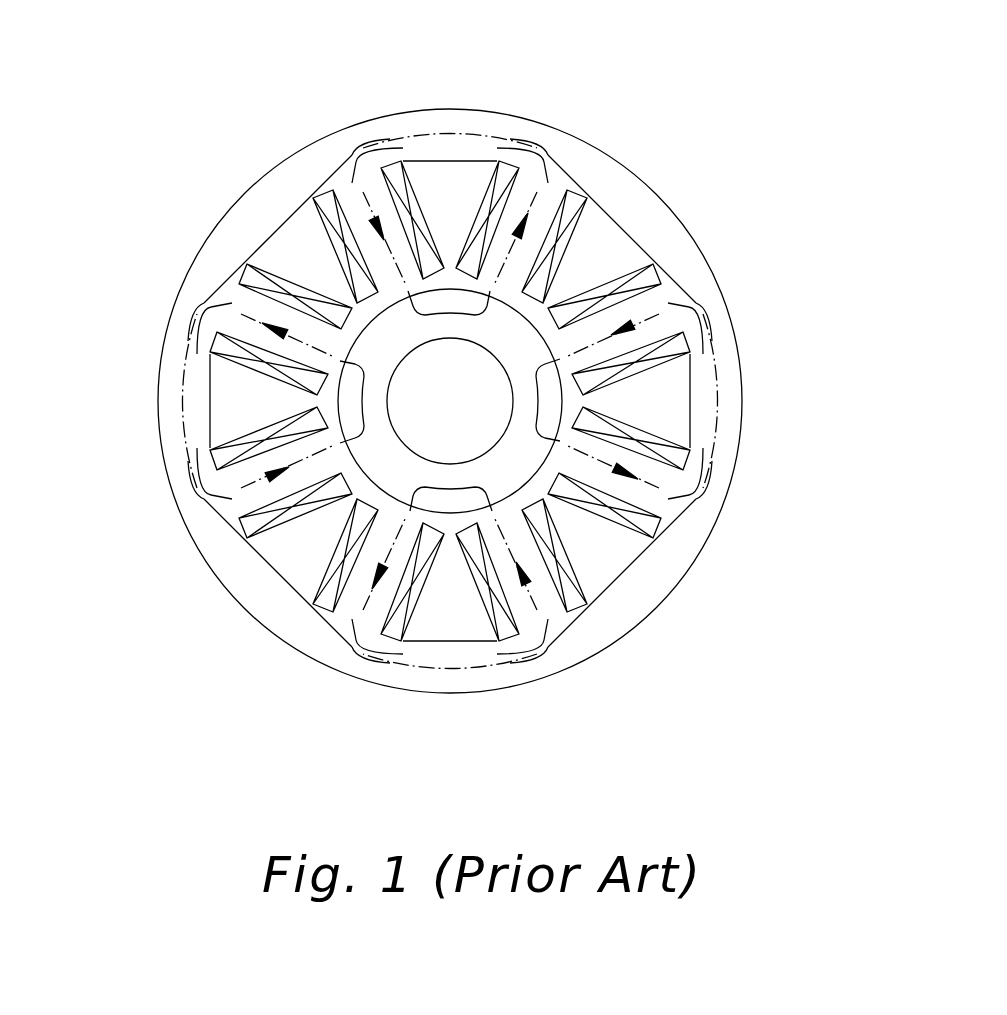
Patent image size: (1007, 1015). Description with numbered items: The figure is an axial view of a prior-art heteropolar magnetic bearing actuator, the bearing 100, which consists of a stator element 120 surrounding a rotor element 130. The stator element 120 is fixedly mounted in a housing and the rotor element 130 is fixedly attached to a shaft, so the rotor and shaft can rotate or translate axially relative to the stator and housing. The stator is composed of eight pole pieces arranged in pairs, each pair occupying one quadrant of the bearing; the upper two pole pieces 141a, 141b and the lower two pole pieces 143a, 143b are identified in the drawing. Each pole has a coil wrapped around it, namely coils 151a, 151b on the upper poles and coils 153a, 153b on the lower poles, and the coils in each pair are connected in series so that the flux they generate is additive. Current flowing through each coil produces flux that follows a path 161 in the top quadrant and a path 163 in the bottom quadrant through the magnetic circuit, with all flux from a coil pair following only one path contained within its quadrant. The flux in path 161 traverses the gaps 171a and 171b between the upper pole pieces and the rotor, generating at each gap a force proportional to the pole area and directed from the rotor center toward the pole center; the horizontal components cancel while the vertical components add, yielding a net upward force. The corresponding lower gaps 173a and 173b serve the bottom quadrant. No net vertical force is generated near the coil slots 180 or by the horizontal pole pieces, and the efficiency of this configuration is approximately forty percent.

The bearing 100 is at (140, 358).
The stator element 120 is at (735, 330).
The rotor element 130 is at (562, 404).
The pole piece 141a is at (407, 293).
The pole piece 141b is at (540, 210).
The pole piece 143a is at (407, 509).
The pole piece 143b is at (538, 590).
The coil 151a is at (407, 190).
The coil 151b is at (543, 245).
The coil 153a is at (407, 612).
The coil 153b is at (540, 590).
The flux path 161 is at (450, 132).
The flux path 163 is at (450, 670).
The gap 171a is at (380, 290).
The gap 171b is at (521, 292).
The gap 173a is at (395, 508).
The gap 173b is at (512, 510).
The coil slots 180 is at (535, 217).